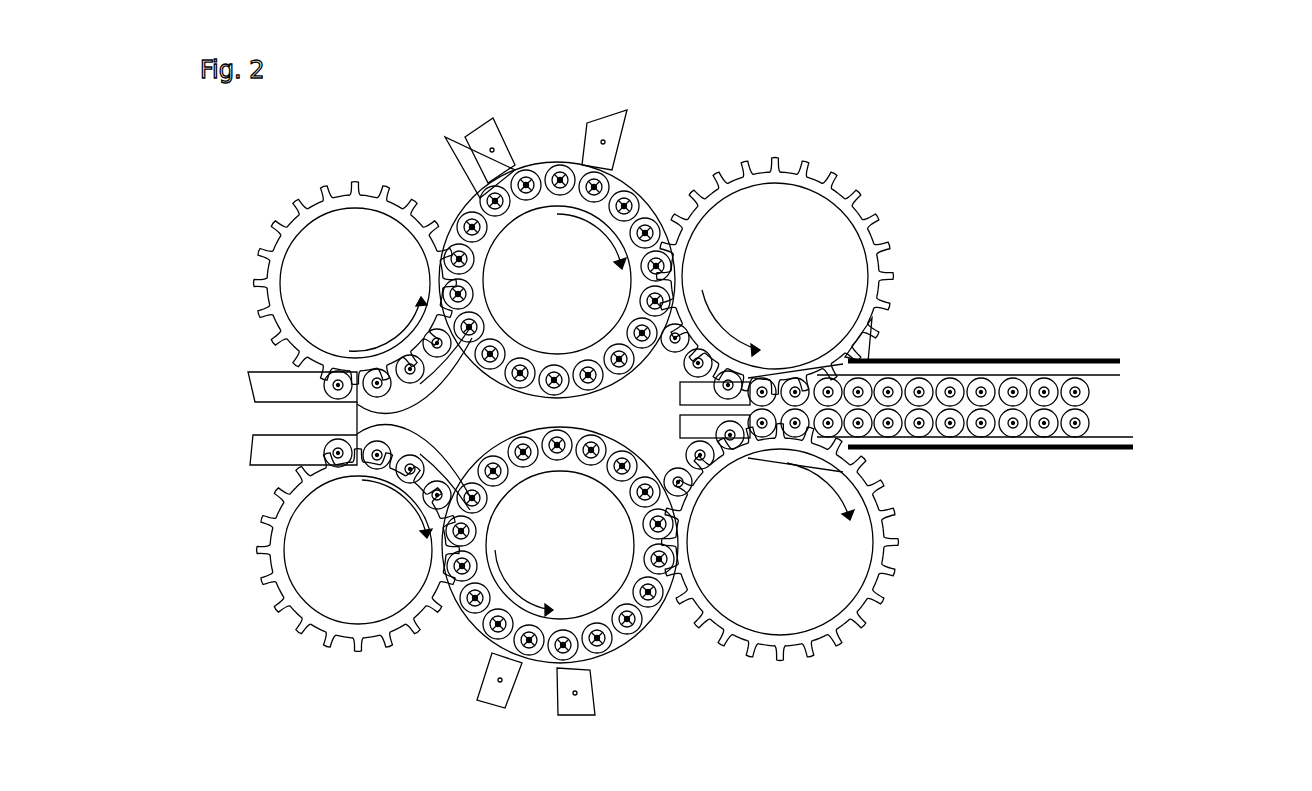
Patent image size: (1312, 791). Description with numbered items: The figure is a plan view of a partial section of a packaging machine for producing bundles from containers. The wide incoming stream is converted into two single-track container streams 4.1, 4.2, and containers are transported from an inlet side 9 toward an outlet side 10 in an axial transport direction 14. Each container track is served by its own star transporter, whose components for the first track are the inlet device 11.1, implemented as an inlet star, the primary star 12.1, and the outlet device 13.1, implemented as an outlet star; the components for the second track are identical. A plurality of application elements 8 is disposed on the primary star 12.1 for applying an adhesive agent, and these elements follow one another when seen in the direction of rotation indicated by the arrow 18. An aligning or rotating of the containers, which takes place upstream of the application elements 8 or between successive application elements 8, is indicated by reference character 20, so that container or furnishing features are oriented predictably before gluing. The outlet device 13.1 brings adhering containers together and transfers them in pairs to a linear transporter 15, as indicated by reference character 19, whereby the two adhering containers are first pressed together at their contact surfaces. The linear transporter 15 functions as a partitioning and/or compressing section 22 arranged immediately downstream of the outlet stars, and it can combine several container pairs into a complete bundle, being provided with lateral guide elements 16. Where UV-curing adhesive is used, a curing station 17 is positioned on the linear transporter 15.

The single-track container stream 4.1 is at (268, 450).
The single-track container stream 4.2 is at (278, 387).
The application element 8 is at (603, 135).
The inlet side 9 is at (432, 421).
The outlet side 10 is at (1285, 405).
The inlet device 11.1 is at (340, 592).
The primary star 12.1 is at (598, 588).
The outlet device 13.1 is at (823, 605).
The axial transport direction 14 is at (650, 415).
The linear transporter 15 is at (1112, 413).
The lateral guide element 16 is at (1035, 440).
The curing station 17 is at (1023, 417).
The direction of rotation 18 is at (557, 280).
The transfer of adhering containers in pairs 19 is at (872, 318).
The aligning or rotating 20 is at (445, 137).
The partitioning and/or compressing section 22 is at (1033, 302).